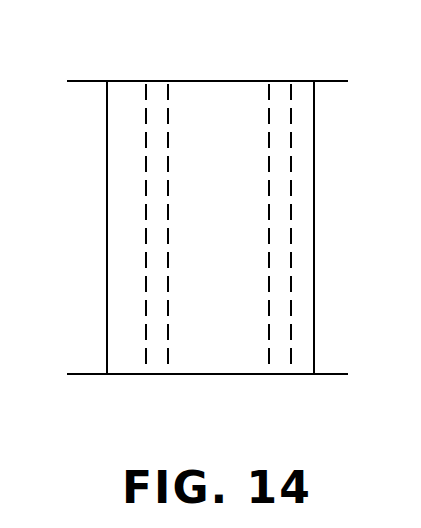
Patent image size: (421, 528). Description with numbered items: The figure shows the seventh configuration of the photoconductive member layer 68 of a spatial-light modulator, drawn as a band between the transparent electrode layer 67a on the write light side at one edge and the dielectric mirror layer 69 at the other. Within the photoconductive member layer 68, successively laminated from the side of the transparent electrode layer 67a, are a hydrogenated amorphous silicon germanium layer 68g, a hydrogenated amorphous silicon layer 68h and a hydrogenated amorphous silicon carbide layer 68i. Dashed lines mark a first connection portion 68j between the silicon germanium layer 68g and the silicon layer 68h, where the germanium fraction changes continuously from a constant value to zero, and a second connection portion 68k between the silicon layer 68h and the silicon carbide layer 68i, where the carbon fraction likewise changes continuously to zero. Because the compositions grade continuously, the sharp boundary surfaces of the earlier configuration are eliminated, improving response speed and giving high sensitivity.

The transparent electrode layer on the write light side 67a is at (82, 95).
The photoconductive member layer 68 is at (316, 58).
The hydrogenated amorphous silicon germanium layer 68g is at (122, 360).
The hydrogenated amorphous silicon layer 68h is at (220, 360).
The hydrogenated amorphous silicon carbide layer 68i is at (303, 360).
The first connection portion 68j is at (175, 379).
The second connection portion 68k is at (298, 379).
The dielectric mirror layer 69 is at (332, 93).